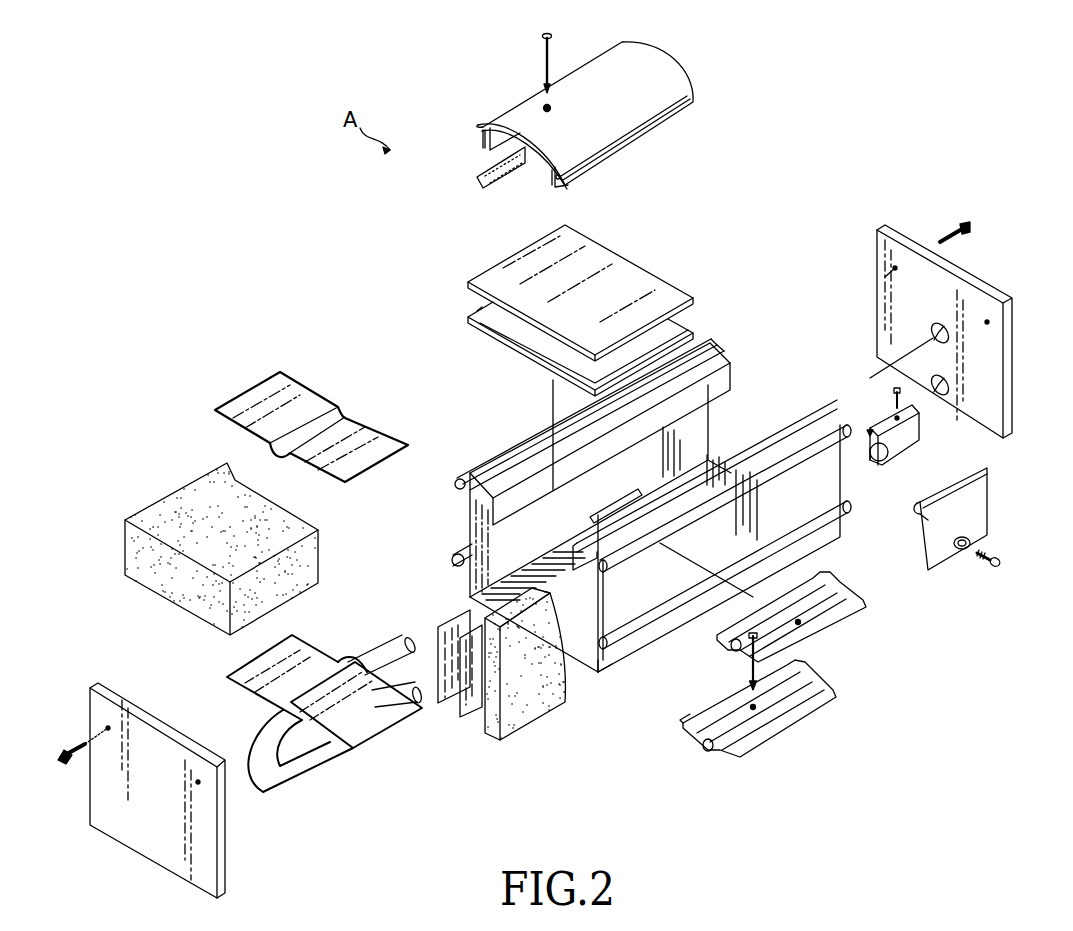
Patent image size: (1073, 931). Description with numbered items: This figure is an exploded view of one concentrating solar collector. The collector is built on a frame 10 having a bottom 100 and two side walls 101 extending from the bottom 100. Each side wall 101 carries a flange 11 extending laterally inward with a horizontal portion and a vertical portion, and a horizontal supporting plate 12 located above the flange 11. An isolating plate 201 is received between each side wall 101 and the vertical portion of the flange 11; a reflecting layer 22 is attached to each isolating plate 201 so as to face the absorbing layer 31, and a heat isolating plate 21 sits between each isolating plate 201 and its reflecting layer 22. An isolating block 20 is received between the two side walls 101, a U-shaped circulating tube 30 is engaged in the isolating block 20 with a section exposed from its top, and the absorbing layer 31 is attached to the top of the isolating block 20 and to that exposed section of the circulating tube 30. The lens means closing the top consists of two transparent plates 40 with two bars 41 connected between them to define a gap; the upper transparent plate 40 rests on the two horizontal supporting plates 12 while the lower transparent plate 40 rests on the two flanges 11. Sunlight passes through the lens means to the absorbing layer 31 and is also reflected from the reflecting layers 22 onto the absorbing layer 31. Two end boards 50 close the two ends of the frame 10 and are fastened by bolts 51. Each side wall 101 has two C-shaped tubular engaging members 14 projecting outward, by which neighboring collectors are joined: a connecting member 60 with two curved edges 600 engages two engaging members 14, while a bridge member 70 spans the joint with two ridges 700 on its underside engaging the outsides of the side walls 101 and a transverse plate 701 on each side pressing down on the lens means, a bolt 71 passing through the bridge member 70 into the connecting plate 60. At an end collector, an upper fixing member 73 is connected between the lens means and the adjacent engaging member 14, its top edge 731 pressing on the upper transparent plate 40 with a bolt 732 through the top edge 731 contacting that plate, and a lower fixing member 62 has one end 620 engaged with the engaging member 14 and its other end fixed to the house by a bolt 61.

The frame 10 is at (628, 535).
The bottom 100 is at (585, 657).
The side wall 101 is at (468, 520).
The flange 11 is at (727, 380).
The horizontal supporting plate 12 is at (717, 347).
The C-shaped tubular engaging member 14 is at (830, 437).
The isolating block 20 is at (217, 612).
The isolating plate 201 is at (538, 710).
The heat isolating plate 21 is at (472, 703).
The reflecting layer 22 is at (445, 693).
The U-shaped circulating tube 30 is at (328, 761).
The absorbing layer 31 is at (373, 727).
The transparent plate 40 is at (653, 279).
The bar 41 is at (468, 303).
The end board 50 is at (212, 815).
The bolt 51 is at (70, 762).
The connecting member 60 is at (765, 682).
The curved edge 600 is at (687, 727).
The bolt 61 is at (987, 570).
The lower fixing member 62 is at (968, 531).
The end of lower fixing member 620 is at (980, 467).
The bridge member 70 is at (694, 73).
The ridge 700 is at (563, 186).
The transverse plate 701 is at (478, 127).
The bolt 71 is at (545, 60).
The upper fixing member 73 is at (893, 465).
The top edge 731 is at (868, 432).
The bolt 732 is at (893, 393).